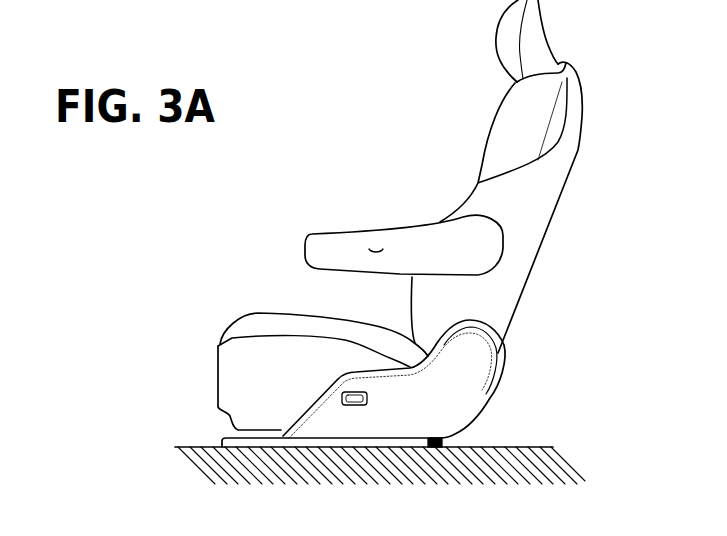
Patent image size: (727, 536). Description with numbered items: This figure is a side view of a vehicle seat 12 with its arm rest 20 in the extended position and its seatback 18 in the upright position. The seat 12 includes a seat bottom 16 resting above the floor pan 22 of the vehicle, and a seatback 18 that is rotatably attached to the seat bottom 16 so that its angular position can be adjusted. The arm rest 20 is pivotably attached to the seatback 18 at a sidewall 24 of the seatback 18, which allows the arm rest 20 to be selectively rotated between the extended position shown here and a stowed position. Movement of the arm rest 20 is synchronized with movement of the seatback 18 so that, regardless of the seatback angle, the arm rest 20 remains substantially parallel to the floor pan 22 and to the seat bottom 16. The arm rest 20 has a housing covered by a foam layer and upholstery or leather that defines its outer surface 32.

The seat 12 is at (495, 55).
The seat bottom 16 is at (235, 383).
The seatback 18 is at (535, 130).
The arm rest 20 is at (309, 233).
The floor pan 22 is at (497, 447).
The sidewall 24 is at (507, 290).
The outer surface 32 is at (378, 247).